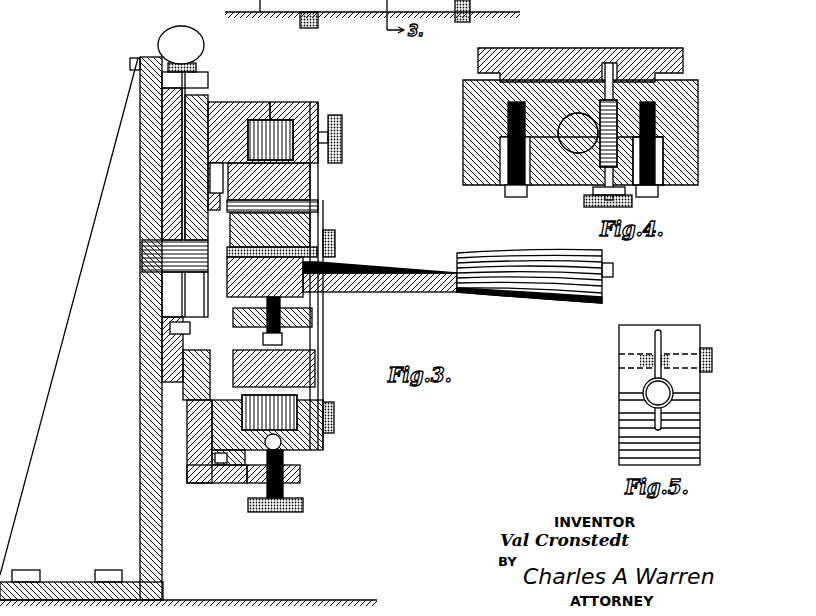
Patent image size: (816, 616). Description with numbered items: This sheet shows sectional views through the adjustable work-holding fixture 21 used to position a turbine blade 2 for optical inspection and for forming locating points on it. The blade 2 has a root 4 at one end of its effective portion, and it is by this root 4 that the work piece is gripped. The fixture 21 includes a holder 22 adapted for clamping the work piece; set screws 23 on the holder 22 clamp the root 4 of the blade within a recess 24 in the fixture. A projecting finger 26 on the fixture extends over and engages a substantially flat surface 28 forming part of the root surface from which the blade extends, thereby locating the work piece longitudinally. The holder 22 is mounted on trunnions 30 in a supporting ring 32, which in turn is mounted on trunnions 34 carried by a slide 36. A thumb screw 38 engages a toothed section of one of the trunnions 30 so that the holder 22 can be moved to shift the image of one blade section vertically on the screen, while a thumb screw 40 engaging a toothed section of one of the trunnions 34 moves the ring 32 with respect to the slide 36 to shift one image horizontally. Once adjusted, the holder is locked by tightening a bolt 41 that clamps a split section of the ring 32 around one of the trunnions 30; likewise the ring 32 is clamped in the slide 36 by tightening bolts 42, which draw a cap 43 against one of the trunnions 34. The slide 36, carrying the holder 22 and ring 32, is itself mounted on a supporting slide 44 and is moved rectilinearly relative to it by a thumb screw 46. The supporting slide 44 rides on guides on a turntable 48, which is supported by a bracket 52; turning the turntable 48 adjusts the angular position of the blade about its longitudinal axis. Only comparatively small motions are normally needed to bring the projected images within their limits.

In FIG. 3, the turbine blade 2 is at (415, 292).
In FIG. 3, the root 4 is at (252, 280).
In FIG. 3, the fixture 21 is at (614, 270).
In FIG. 3, the holder 22 is at (318, 315).
In FIG. 3, the set screws 23 is at (285, 340).
In FIG. 3, the recess 24 is at (318, 297).
In FIG. 3, the projecting finger 26 is at (333, 248).
In FIG. 3, the flat surface 28 is at (320, 265).
In FIG. 3, the trunnions 30 is at (150, 350).
In FIG. 5, the trunnions 30 is at (655, 395).
In FIG. 3, the supporting ring 32 is at (320, 178).
In FIG. 5, the supporting ring 32 is at (695, 400).
In FIG. 3, the trunnions 34 is at (177, 33).
In FIG. 4, the trunnions 34 is at (578, 152).
In FIG. 3, the slide 36 is at (310, 440).
In FIG. 4, the slide 36 is at (688, 110).
In FIG. 3, the thumb screw 38 is at (348, 232).
In FIG. 3, the thumb screw 40 is at (343, 126).
In FIG. 4, the thumb screw 40 is at (597, 206).
In FIG. 5, the bolt 41 is at (712, 357).
In FIG. 4, the bolts 42 is at (660, 191).
In FIG. 4, the cap 43 is at (652, 160).
In FIG. 3, the supporting slide 44 is at (210, 466).
In FIG. 3, the thumb screw 46 is at (303, 505).
In FIG. 3, the turntable 48 is at (150, 200).
In FIG. 3, the bracket 52 is at (132, 446).